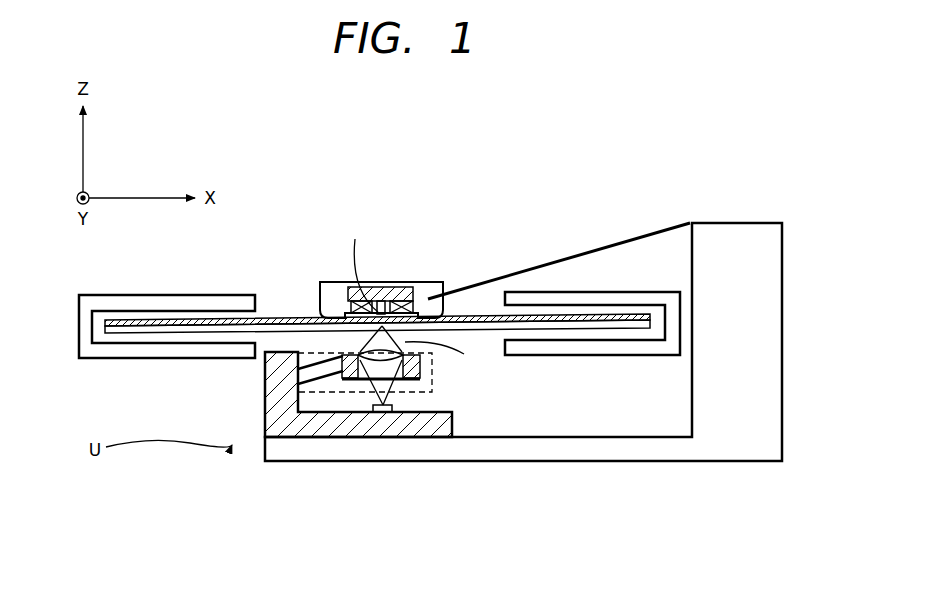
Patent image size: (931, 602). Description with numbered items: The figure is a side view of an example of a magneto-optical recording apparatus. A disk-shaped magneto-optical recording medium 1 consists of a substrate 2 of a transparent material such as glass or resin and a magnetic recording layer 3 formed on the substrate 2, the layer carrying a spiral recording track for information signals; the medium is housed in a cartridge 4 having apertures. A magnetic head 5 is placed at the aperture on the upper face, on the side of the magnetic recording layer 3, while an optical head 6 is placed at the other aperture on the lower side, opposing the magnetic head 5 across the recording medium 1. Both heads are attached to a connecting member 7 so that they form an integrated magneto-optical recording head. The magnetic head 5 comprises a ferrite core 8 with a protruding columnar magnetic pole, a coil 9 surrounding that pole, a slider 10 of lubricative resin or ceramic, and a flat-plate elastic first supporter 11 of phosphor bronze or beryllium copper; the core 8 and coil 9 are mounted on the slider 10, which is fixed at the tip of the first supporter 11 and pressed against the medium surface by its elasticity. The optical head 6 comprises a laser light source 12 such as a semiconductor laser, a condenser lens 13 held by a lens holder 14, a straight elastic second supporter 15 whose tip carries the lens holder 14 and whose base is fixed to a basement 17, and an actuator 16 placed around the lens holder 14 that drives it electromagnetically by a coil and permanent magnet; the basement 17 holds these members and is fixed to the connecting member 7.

The magneto-optical recording medium 1 is at (377, 370).
The substrate 2 is at (192, 392).
The magnetic recording layer 3 is at (184, 327).
The cartridge 4 is at (150, 296).
The magnetic head 5 is at (505, 248).
The optical head 6 is at (373, 431).
The connecting member 7 is at (745, 450).
The core 8 is at (383, 290).
The coil 9 is at (401, 302).
The slider 10 is at (432, 286).
The first supporter 11 is at (559, 255).
The laser light source 12 is at (384, 413).
The condenser lens 13 is at (352, 381).
The lens holder 14 is at (409, 362).
The second supporter 15 is at (321, 378).
The actuator 16 is at (388, 426).
The basement 17 is at (280, 437).